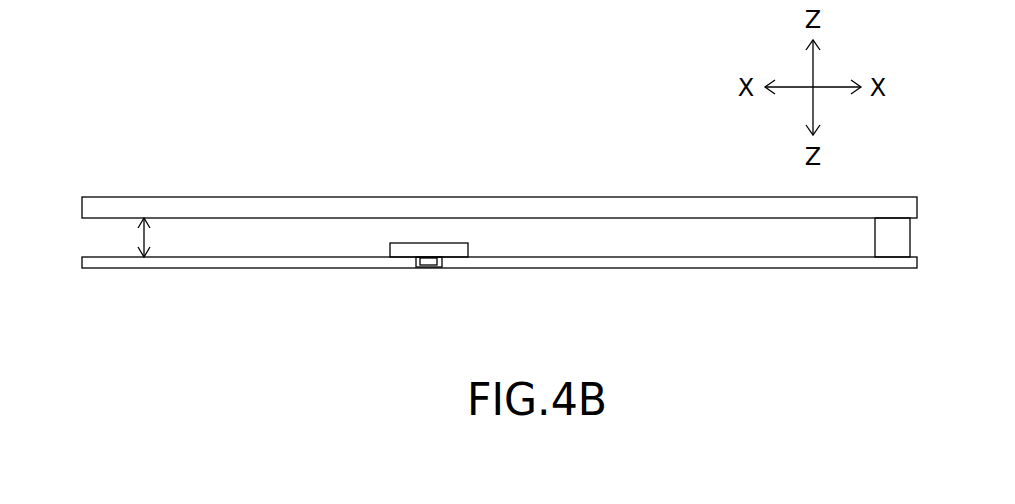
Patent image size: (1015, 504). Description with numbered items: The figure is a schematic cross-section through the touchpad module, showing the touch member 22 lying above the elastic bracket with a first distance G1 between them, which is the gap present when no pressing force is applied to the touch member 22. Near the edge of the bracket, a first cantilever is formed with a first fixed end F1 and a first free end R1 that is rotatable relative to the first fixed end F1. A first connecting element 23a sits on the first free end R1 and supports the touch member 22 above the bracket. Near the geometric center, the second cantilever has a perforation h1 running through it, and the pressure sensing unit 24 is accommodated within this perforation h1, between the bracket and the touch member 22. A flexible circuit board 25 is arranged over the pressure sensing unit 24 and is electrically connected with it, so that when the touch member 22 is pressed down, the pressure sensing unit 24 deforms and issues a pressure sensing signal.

The touch member 22 is at (573, 208).
The first connecting element 23a is at (893, 237).
The pressure sensing unit 24 is at (443, 264).
The flexible circuit board 25 is at (428, 250).
The first distance G1 is at (123, 237).
The perforation h1 is at (422, 266).
The first fixed end F1 is at (834, 263).
The first free end R1 is at (920, 263).